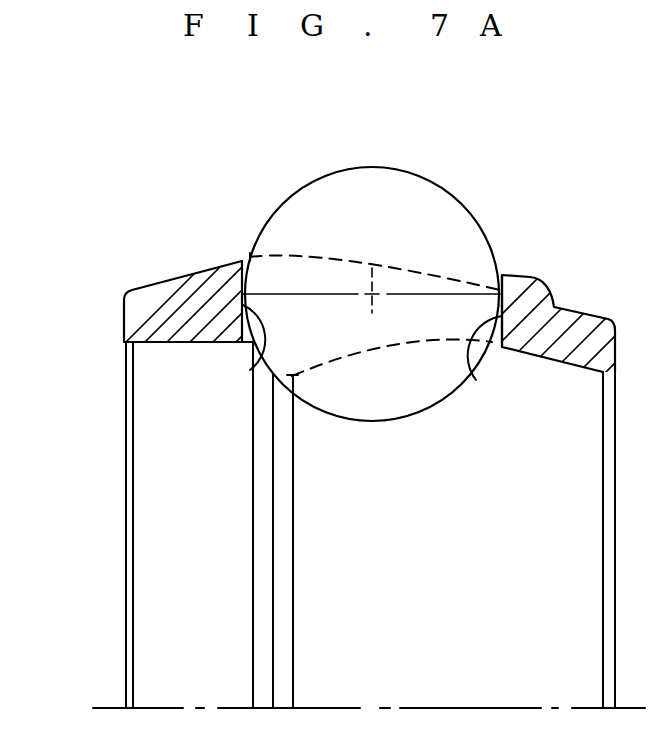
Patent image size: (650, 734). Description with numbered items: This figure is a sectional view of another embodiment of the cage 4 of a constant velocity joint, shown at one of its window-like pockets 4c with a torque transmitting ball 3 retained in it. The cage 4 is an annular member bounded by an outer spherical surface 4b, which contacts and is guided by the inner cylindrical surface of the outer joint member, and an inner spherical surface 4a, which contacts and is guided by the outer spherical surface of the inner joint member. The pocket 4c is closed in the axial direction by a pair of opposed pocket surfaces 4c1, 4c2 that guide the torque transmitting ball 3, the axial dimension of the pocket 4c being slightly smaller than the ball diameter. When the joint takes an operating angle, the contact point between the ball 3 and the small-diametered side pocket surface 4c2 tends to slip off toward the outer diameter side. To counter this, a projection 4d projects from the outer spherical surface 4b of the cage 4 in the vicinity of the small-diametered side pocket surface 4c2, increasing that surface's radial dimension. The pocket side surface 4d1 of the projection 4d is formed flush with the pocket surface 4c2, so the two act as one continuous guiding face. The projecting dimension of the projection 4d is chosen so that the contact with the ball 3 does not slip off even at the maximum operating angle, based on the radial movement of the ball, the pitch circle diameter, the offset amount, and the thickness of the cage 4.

The torque transmitting ball 3 is at (287, 199).
The cage 4 is at (335, 434).
The inner spherical surface 4a is at (396, 346).
The outer spherical surface 4b is at (280, 257).
The pocket 4c is at (341, 270).
The pocket surface 4c1 is at (262, 362).
The small-diametered side pocket surface 4c2 is at (475, 379).
The projection 4d is at (527, 278).
The pocket side surface 4d1 is at (500, 288).